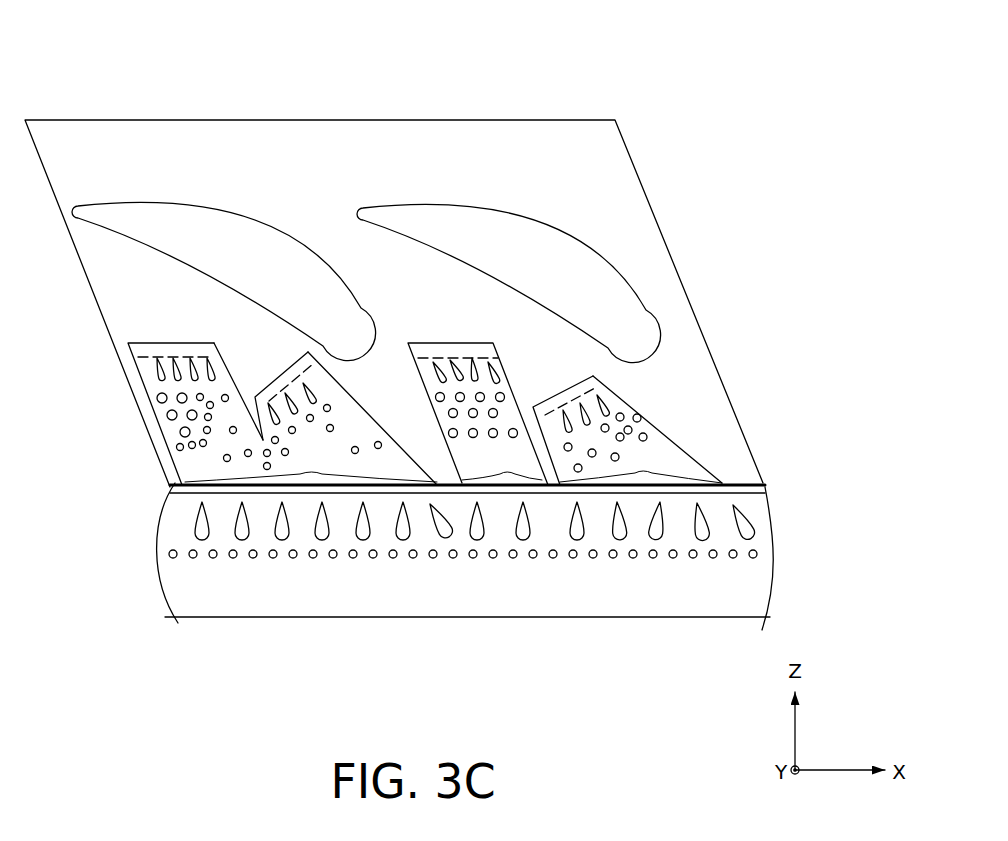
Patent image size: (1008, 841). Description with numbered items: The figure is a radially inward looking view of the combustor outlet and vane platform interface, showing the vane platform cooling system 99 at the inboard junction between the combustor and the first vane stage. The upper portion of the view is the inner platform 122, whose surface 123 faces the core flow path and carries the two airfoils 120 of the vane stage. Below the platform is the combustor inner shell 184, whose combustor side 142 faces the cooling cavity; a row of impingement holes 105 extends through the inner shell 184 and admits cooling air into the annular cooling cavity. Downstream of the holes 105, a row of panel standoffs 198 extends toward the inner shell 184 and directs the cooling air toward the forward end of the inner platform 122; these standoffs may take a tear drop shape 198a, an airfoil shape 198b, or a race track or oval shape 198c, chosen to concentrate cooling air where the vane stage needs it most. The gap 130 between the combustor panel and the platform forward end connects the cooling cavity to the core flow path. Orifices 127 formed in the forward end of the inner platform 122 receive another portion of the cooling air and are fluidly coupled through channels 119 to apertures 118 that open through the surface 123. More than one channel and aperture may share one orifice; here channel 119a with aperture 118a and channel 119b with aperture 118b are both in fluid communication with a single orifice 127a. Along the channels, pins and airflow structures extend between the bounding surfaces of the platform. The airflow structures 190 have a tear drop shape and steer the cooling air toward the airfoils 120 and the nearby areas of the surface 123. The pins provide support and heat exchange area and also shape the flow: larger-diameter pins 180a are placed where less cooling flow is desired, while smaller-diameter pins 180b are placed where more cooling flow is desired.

The vane platform cooling system 99 is at (133, 80).
The inner platform 122 is at (547, 133).
The surface 123 is at (275, 186).
The airfoil 120 is at (241, 279).
The aperture 118a is at (153, 340).
The aperture 118b is at (309, 355).
The aperture 118 is at (557, 403).
The channel 119a is at (219, 388).
The channel 119b is at (357, 437).
The channel 119 is at (658, 438).
The pin 180a is at (158, 396).
The pin 180b is at (333, 401).
The airflow structure 190 is at (601, 403).
The orifice 127a is at (311, 461).
The orifice 127 is at (592, 463).
The gap 130 is at (167, 488).
The combustor side 142 is at (515, 610).
The inner shell 184 is at (597, 605).
The panel standoff 198 is at (402, 540).
The panel standoff 198a is at (745, 521).
The panel standoff 198b is at (700, 535).
The panel standoff 198c is at (617, 535).
The impingement hole 105 is at (177, 558).